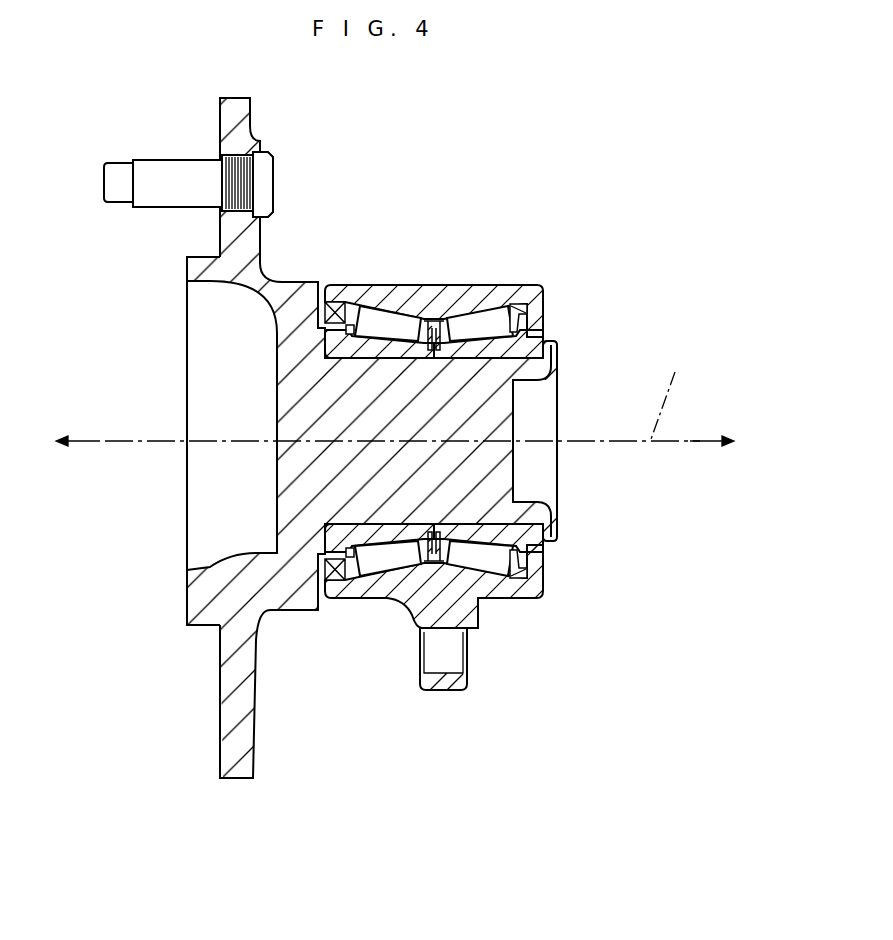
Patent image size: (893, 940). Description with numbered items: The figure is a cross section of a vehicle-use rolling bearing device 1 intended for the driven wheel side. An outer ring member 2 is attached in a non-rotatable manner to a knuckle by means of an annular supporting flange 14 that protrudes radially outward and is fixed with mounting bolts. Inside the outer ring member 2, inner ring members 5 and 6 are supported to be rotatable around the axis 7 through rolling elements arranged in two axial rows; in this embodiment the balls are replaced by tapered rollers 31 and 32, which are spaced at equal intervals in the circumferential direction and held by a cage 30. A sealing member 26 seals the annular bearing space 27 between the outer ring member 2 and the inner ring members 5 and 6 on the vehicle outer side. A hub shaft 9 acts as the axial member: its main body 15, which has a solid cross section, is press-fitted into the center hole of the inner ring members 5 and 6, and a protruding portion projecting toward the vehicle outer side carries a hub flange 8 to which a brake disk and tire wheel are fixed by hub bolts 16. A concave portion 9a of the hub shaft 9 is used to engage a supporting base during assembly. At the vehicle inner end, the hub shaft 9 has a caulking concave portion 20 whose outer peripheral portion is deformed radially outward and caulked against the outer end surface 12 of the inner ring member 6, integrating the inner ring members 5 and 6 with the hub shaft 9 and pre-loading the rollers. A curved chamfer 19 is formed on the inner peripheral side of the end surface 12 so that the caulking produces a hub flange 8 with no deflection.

The rolling bearing device 1 is at (513, 238).
The outer ring member 2 is at (417, 290).
The inner ring member 5 is at (330, 343).
The inner ring member 6 is at (532, 348).
The axis 7 is at (667, 394).
The hub flange 8 is at (240, 113).
The hub shaft 9 is at (514, 398).
The concave portion 9a is at (210, 283).
The outer end surface 12 is at (545, 553).
The supporting flange 14 is at (443, 687).
The main body 15 is at (468, 500).
The hub bolts 16 is at (158, 158).
The curved chamfer 19 is at (540, 532).
The caulking concave portion 20 is at (547, 422).
The sealing member 26 is at (343, 310).
The annular bearing space 27 is at (435, 321).
The cage 30 is at (437, 543).
The tapered rollers 31 is at (383, 306).
The tapered rollers 32 is at (482, 328).